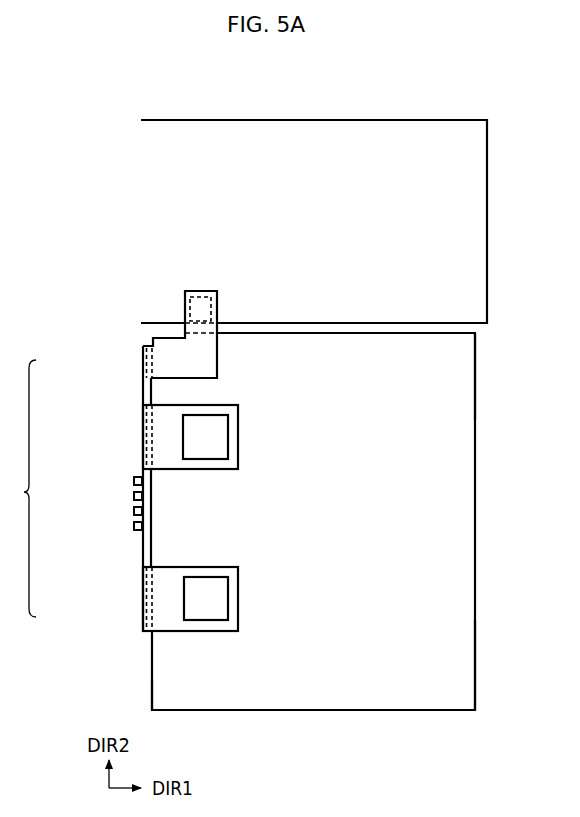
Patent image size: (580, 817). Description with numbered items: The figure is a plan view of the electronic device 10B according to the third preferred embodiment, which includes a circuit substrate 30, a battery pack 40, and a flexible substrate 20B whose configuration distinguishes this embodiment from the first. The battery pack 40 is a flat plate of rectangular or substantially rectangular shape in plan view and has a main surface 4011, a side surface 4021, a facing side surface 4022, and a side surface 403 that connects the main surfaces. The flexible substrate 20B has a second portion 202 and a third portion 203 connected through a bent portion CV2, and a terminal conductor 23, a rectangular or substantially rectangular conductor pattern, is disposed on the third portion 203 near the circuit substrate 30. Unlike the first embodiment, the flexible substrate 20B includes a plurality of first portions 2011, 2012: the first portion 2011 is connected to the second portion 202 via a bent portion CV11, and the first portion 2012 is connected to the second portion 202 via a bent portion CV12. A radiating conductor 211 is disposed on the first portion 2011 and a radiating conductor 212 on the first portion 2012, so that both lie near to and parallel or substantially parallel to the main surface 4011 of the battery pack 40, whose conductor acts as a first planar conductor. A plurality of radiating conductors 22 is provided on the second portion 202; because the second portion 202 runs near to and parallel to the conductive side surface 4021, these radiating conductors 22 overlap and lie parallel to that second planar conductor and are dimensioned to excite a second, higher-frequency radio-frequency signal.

The electronic device 10B is at (482, 76).
The circuit substrate 30 is at (404, 128).
The battery pack 40 is at (470, 467).
The main surface 4011 is at (458, 416).
The side surface 4021 is at (149, 700).
The side surface 4022 is at (479, 656).
The side surface 403 is at (434, 715).
The flexible substrate 20B is at (18, 488).
The third portion 203 is at (162, 363).
The second portion 202 is at (146, 401).
The first portion 2012 is at (150, 437).
The first portion 2011 is at (146, 600).
The radiating conductor 212 is at (203, 450).
The radiating conductor 211 is at (205, 605).
The radiating conductors 22 is at (133, 480).
The terminal conductor 23 is at (190, 298).
The bent portion CV2 is at (146, 338).
The bent portion CV11 is at (147, 634).
The bent portion CV12 is at (133, 488).